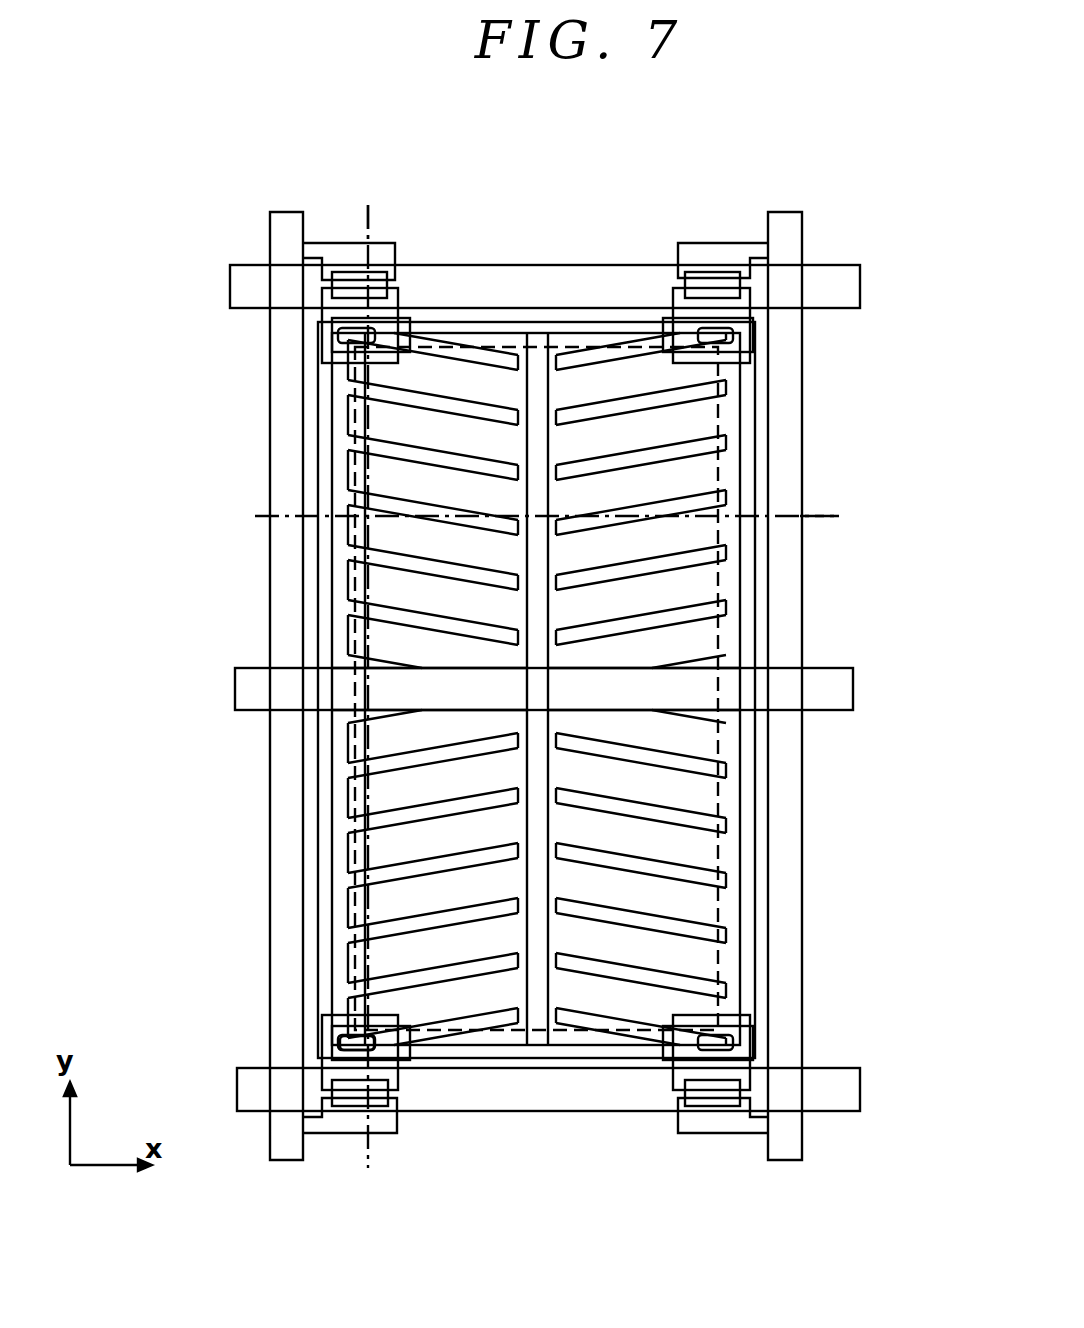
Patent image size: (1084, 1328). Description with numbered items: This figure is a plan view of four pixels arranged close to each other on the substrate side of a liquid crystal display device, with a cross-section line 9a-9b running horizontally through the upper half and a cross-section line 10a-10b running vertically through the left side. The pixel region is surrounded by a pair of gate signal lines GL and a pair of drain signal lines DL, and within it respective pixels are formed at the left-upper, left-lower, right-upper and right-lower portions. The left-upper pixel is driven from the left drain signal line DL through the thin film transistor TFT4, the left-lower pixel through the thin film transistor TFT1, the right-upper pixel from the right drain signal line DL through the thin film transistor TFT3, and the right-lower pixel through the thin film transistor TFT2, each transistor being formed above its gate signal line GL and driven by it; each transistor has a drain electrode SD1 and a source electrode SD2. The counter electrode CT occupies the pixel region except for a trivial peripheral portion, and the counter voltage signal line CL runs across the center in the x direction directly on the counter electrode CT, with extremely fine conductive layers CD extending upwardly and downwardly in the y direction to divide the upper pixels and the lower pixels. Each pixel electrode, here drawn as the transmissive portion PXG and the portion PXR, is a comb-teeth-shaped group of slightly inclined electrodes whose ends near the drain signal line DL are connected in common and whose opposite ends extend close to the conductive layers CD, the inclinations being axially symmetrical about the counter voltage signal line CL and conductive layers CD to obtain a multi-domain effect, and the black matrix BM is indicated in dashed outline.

The drain signal line DL is at (790, 242).
The gate signal line GL is at (828, 300).
The counter voltage signal line CL is at (853, 690).
The counter electrode CT is at (735, 778).
The conductive layer CD is at (538, 333).
The black matrix BM is at (352, 378).
The pixel electrode (transmissive portion) PXG is at (672, 568).
The pixel electrode (reflective portion) PXR is at (397, 505).
The thin film transistor TFT1 is at (353, 1097).
The thin film transistor TFT2 is at (705, 1097).
The thin film transistor TFT3 is at (706, 283).
The thin film transistor TFT4 is at (402, 288).
The drain electrode SD1 is at (298, 1130).
The source electrode SD2 is at (340, 1040).
The section line end 9a is at (527, 499).
The section line end 9b is at (836, 499).
The section line end 10a is at (399, 694).
The section line end 10b is at (399, 221).